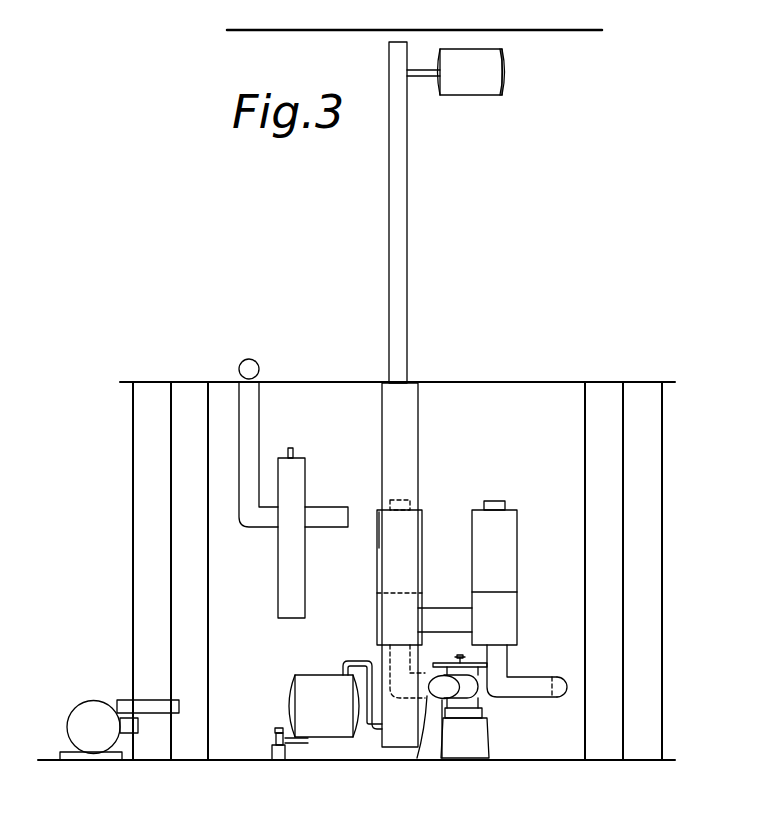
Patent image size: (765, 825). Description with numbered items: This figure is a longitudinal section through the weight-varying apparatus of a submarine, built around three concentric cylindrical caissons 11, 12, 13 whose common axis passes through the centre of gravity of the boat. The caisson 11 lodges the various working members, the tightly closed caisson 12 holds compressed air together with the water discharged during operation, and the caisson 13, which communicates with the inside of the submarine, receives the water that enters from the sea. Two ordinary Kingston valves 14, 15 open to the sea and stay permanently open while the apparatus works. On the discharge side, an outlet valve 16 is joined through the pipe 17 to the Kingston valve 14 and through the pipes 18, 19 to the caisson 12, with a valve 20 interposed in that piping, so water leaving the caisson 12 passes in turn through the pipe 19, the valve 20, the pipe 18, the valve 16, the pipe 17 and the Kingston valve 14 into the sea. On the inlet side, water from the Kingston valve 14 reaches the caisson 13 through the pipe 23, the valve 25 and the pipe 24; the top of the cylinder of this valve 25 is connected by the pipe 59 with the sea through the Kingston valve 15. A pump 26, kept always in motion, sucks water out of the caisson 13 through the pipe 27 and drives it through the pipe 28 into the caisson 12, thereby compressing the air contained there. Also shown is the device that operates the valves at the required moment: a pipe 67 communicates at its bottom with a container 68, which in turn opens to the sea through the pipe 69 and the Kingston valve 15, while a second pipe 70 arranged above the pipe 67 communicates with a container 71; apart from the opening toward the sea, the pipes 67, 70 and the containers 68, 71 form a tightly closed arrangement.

The cylindrical caisson 11 is at (359, 571).
The tightly closed caisson 12 is at (606, 571).
The caisson 13 is at (646, 571).
The Kingston valve 14 is at (484, 737).
The Kingston valve 15 is at (273, 752).
The outlet valve 16 is at (420, 604).
The pipe 17 is at (417, 758).
The pipe 18 is at (452, 626).
The pipe 19 is at (517, 680).
The valve 20 is at (512, 612).
The pipe 23 is at (312, 512).
The pipe 24 is at (250, 416).
The valve 25 is at (297, 561).
The pump 26 is at (100, 692).
The pipe 27 is at (127, 733).
The pipe 28 is at (118, 705).
The pipe 59 is at (295, 452).
The pipe 67 is at (407, 438).
The container 68 is at (330, 664).
The pipe 69 is at (305, 741).
The second pipe 70 is at (402, 212).
The container 71 is at (471, 93).